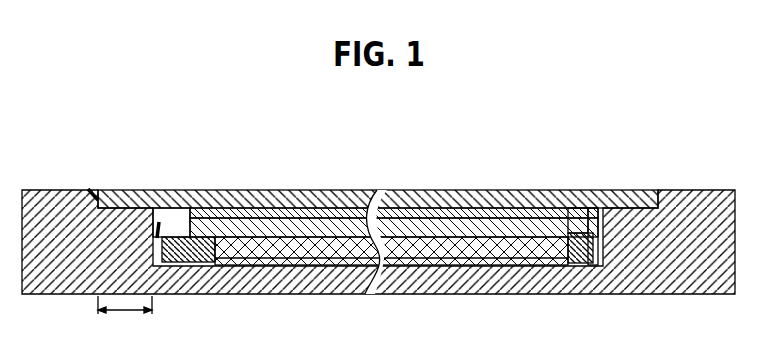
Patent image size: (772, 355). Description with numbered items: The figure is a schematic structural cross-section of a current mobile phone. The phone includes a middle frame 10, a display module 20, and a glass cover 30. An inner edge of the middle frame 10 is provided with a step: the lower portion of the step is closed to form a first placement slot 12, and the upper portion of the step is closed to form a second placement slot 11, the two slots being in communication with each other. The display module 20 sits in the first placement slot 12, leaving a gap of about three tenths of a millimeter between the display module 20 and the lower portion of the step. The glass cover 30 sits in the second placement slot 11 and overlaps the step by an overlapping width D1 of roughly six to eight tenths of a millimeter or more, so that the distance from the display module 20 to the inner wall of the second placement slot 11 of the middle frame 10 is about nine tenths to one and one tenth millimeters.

The middle frame 10 is at (42, 192).
The second placement slot 11 is at (84, 188).
The first placement slot 12 is at (158, 222).
The display module 20 is at (602, 190).
The glass cover 30 is at (318, 212).
The overlapping width D1 is at (125, 323).